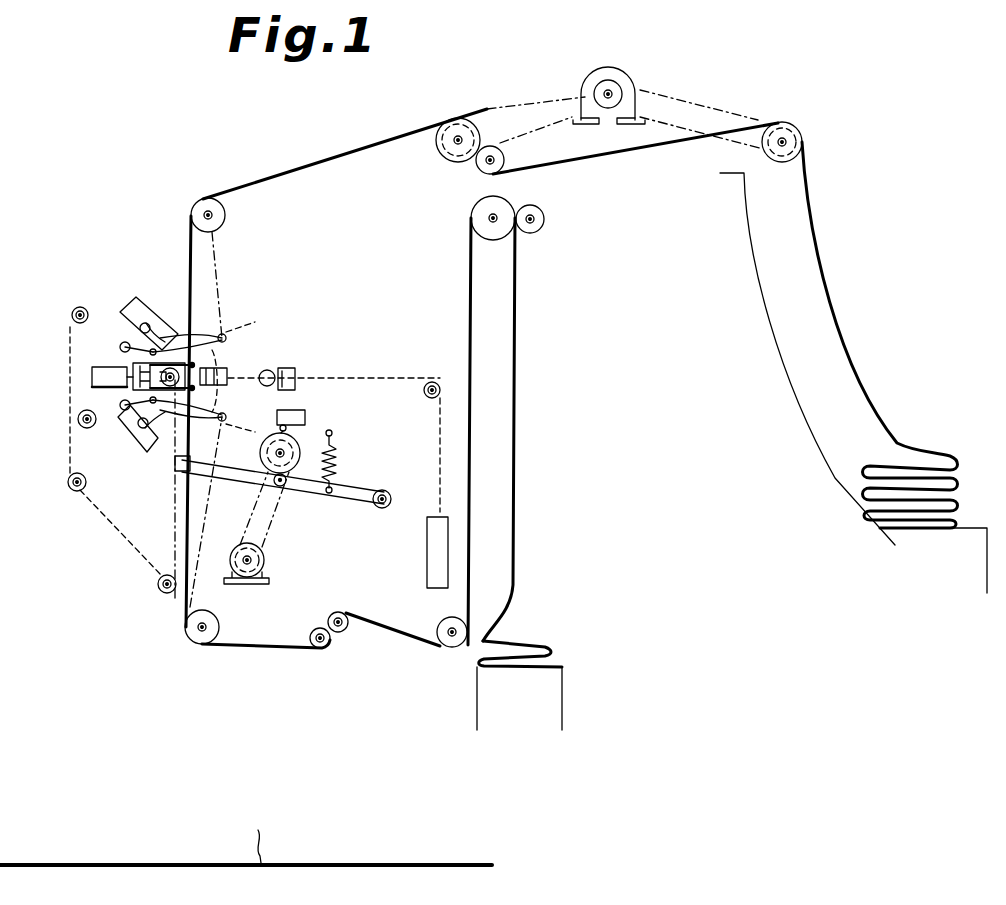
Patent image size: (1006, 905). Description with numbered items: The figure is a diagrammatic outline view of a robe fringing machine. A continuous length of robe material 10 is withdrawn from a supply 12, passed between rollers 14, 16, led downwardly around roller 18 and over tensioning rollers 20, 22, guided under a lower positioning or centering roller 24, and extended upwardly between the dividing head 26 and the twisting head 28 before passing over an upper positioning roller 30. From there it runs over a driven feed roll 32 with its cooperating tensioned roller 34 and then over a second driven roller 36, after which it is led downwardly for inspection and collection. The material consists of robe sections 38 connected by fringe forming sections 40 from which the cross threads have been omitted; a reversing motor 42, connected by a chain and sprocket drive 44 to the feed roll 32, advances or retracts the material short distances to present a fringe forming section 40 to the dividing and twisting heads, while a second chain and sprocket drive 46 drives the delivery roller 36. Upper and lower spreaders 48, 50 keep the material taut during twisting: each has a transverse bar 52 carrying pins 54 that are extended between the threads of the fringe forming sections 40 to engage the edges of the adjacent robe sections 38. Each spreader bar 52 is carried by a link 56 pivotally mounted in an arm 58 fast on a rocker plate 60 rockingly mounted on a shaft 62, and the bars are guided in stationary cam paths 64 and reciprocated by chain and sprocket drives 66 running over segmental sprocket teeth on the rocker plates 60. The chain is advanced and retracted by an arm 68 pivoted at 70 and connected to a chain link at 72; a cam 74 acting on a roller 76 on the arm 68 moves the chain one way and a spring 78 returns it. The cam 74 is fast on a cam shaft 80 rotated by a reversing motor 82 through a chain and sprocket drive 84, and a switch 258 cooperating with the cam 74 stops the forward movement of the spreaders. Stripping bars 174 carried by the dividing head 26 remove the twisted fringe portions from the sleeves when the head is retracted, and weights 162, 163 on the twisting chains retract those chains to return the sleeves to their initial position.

The robe material 10 is at (514, 590).
The supply of robe material 12 is at (560, 648).
The roller 14 is at (545, 217).
The roller 16 is at (472, 215).
The roller 18 is at (440, 623).
The tensioning roller 20 is at (346, 631).
The tensioning roller 22 is at (318, 630).
The lower positioning or centering roller 24 is at (218, 622).
The dividing head 26 is at (120, 361).
The twisting head 28 is at (272, 368).
The upper positioning roller 30 is at (225, 216).
The driven feed roll 32 is at (441, 151).
The tensioned roller 34 is at (506, 153).
The second driven roller 36 is at (872, 122).
The robe section 38 is at (515, 379).
The fringe forming section 40 is at (468, 294).
The reversing motor 42 is at (605, 76).
The chain and sprocket drive 44 is at (548, 100).
The second chain and sprocket drive 46 is at (684, 106).
The upper spreader 48 is at (126, 292).
The lower spreader 50 is at (118, 458).
The transverse bar 52 is at (162, 336).
The pins 54 is at (208, 458).
The link 56 is at (152, 323).
The arm 58 is at (121, 344).
The rocker plate 60 is at (120, 308).
The shaft 62 is at (148, 374).
The stationary cam path 64 is at (233, 366).
The chain and sprocket drive 66 is at (70, 330).
The arm 68 is at (233, 480).
The pivot 70 is at (390, 493).
The chain connection 72 is at (203, 441).
The cam 74 is at (298, 442).
The roller 76 is at (284, 486).
The spring 78 is at (340, 461).
The cam shaft 80 is at (276, 454).
The reversing motor 82 is at (265, 565).
The chain and sprocket drive 84 is at (272, 520).
The weight 162 is at (418, 574).
The weight 163 is at (392, 563).
The stripping bars 174 is at (234, 386).
The switch 258 is at (300, 410).